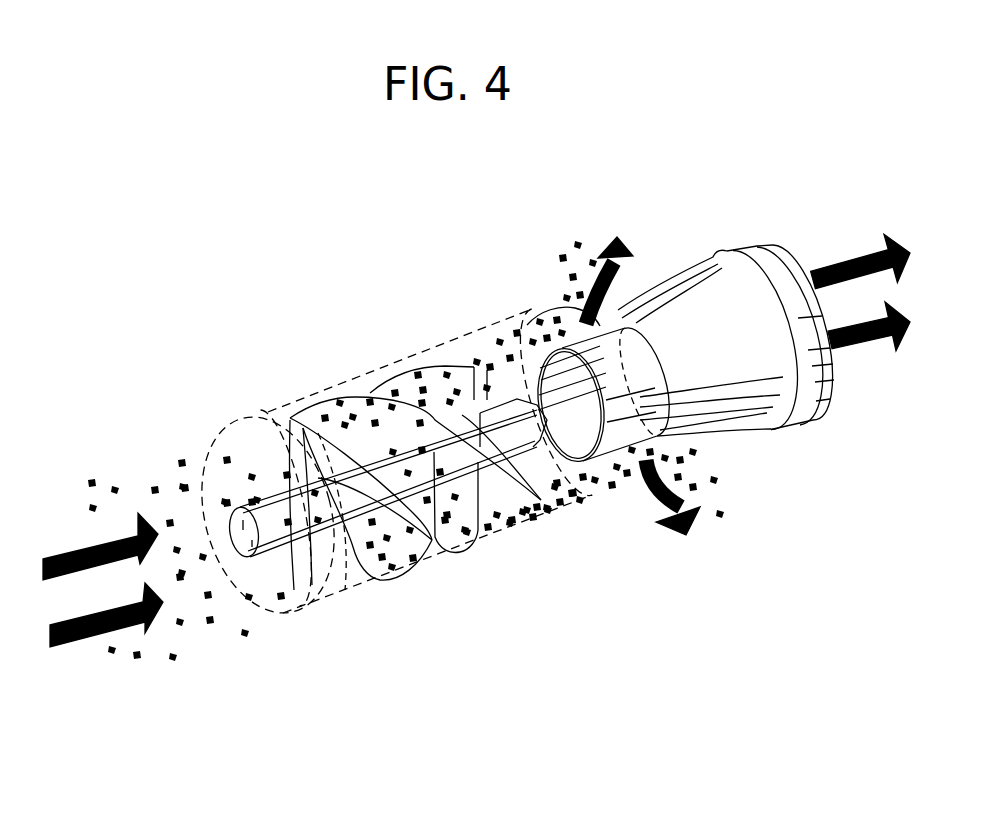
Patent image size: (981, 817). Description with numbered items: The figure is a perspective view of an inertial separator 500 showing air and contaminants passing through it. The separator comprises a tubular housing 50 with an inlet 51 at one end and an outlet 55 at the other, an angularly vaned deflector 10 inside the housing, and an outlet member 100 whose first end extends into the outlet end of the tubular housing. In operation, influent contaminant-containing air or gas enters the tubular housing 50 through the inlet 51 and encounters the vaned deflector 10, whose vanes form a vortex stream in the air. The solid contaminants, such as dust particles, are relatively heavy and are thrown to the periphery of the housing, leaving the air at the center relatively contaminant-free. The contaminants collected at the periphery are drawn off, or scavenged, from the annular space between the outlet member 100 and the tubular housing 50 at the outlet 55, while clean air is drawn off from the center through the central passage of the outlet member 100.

The inertial separator 500 is at (476, 460).
The angularly vaned deflector 10 is at (433, 377).
The tubular housing 50 is at (482, 547).
The inlet 51 is at (270, 625).
The outlet 55 is at (610, 323).
The outlet member 100 is at (740, 410).